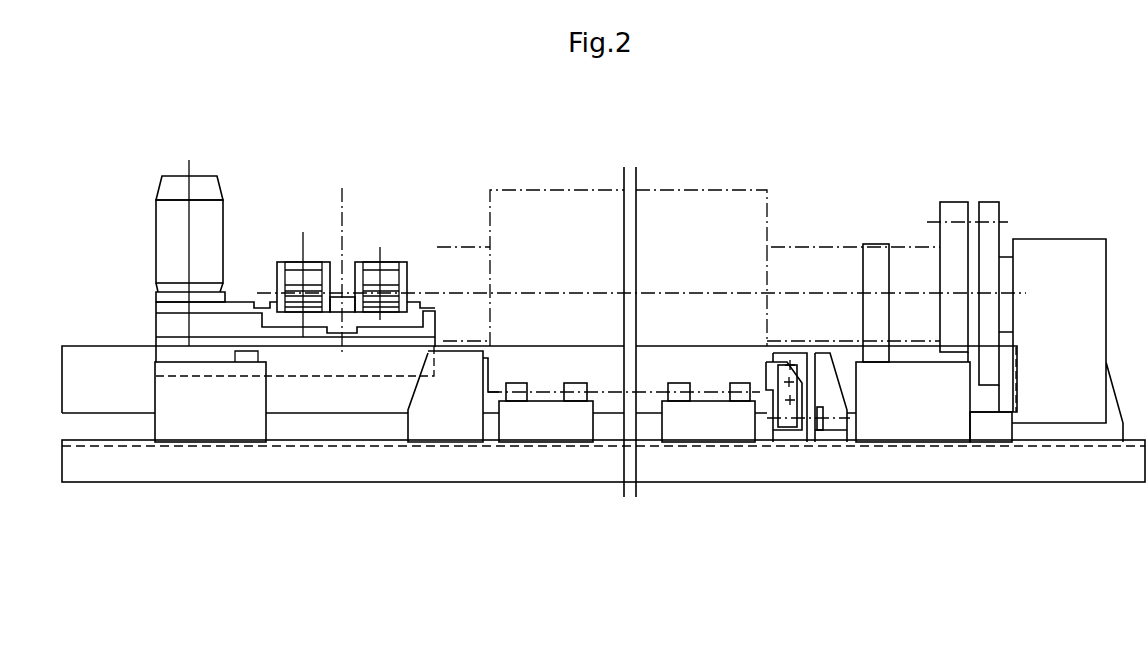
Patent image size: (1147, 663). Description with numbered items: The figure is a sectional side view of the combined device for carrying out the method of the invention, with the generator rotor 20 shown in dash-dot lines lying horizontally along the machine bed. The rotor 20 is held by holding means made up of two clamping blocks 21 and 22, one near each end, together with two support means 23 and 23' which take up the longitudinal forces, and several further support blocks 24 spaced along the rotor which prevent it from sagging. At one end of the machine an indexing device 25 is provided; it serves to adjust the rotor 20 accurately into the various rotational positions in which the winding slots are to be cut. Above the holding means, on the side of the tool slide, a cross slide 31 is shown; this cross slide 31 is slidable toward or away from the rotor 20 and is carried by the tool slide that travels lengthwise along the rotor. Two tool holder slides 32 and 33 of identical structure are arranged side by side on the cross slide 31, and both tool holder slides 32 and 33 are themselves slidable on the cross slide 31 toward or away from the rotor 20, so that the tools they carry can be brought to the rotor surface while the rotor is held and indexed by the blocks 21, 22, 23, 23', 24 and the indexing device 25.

The generator rotor 20 is at (703, 218).
The clamping block 21 is at (211, 413).
The clamping block 22 is at (873, 256).
The support means 23 is at (573, 484).
The support means 23' is at (812, 486).
The support blocks 24 is at (733, 432).
The indexing device 25 is at (1068, 252).
The cross slide 31 is at (412, 318).
The tool holder slide 32 is at (278, 261).
The tool holder slide 33 is at (402, 265).